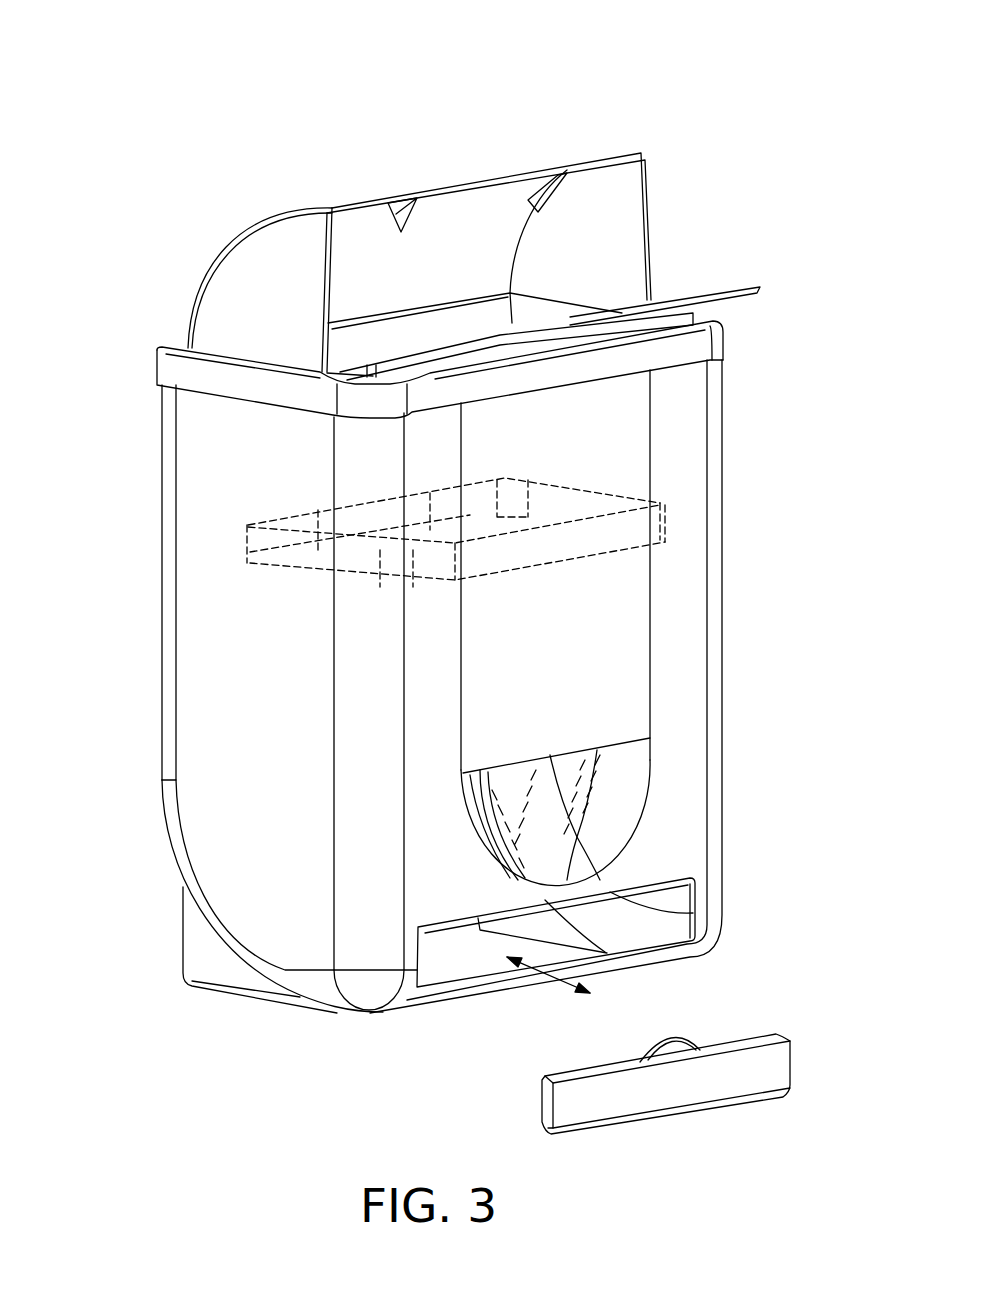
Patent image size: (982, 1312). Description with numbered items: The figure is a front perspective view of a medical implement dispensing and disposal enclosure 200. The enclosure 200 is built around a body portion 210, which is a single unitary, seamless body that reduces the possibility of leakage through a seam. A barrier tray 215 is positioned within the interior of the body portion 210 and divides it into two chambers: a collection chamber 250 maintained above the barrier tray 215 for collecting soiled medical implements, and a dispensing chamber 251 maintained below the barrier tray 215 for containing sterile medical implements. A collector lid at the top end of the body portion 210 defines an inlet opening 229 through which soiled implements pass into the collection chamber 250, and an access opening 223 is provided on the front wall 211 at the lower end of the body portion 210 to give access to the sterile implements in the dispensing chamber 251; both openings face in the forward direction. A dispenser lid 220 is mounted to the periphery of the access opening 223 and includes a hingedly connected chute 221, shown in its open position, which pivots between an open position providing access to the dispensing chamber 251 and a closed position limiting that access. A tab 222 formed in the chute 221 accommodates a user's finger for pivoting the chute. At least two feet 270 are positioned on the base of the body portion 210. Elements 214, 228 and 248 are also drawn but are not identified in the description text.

The enclosure 200 is at (218, 152).
The body portion 210 is at (722, 523).
The front wall 211 is at (680, 677).
The dispensing drum 214 is at (637, 827).
The barrier tray 215 is at (243, 542).
The dispenser lid 220 is at (540, 1097).
The chute 221 is at (765, 1073).
The tab 222 is at (693, 1047).
The access opening 223 is at (695, 940).
The back plate 228 is at (743, 295).
The inlet opening 229 is at (525, 318).
The lid 248 is at (400, 222).
The collection chamber 250 is at (273, 292).
The dispensing chamber 251 is at (142, 592).
The feet 270 is at (650, 717).